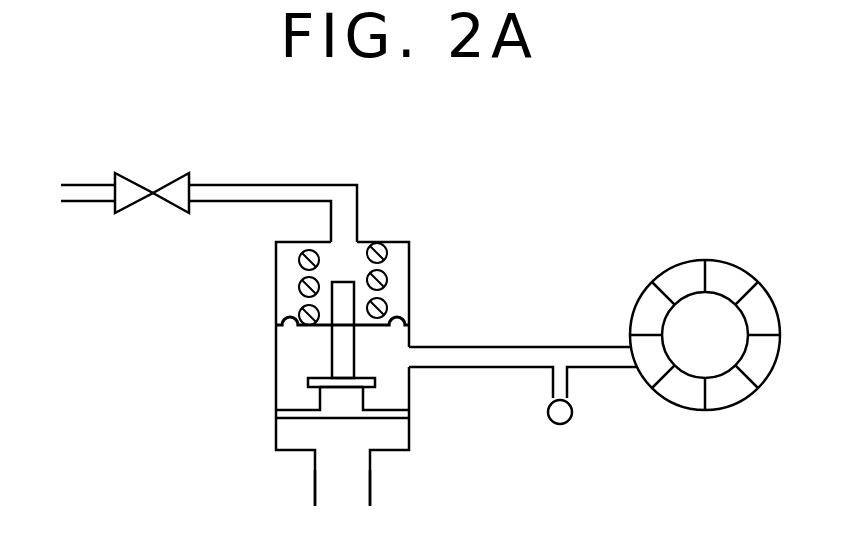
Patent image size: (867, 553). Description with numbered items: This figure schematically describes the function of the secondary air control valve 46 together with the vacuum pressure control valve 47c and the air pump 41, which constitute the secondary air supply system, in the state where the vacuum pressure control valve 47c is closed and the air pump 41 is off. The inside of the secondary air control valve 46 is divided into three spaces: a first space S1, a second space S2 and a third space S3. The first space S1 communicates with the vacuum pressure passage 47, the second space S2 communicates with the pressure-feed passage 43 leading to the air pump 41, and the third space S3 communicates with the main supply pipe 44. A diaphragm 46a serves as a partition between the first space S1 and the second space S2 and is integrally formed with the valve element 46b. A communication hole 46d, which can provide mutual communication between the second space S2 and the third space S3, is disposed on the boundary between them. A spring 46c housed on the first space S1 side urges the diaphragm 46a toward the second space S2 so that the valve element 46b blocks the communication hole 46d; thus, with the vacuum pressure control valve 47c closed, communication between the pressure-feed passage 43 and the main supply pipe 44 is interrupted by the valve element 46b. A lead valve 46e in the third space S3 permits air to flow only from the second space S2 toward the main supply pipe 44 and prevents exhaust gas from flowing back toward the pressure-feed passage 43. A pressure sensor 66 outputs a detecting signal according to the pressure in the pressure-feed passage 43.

The air pump 41 is at (654, 271).
The pressure-feed passage 43 is at (457, 351).
The main supply pipe 44 is at (370, 485).
The secondary air control valve 46 is at (276, 258).
The diaphragm 46a is at (300, 337).
The valve element 46b is at (336, 352).
The spring 46c is at (378, 244).
The communication hole 46d is at (366, 393).
The lead valve 46e is at (320, 428).
The vacuum pressure passage 47 is at (301, 186).
The vacuum pressure control valve 47c is at (167, 204).
The pressure sensor 66 is at (572, 418).
The first space S1 is at (393, 288).
The second space S2 is at (400, 365).
The third space S3 is at (343, 403).